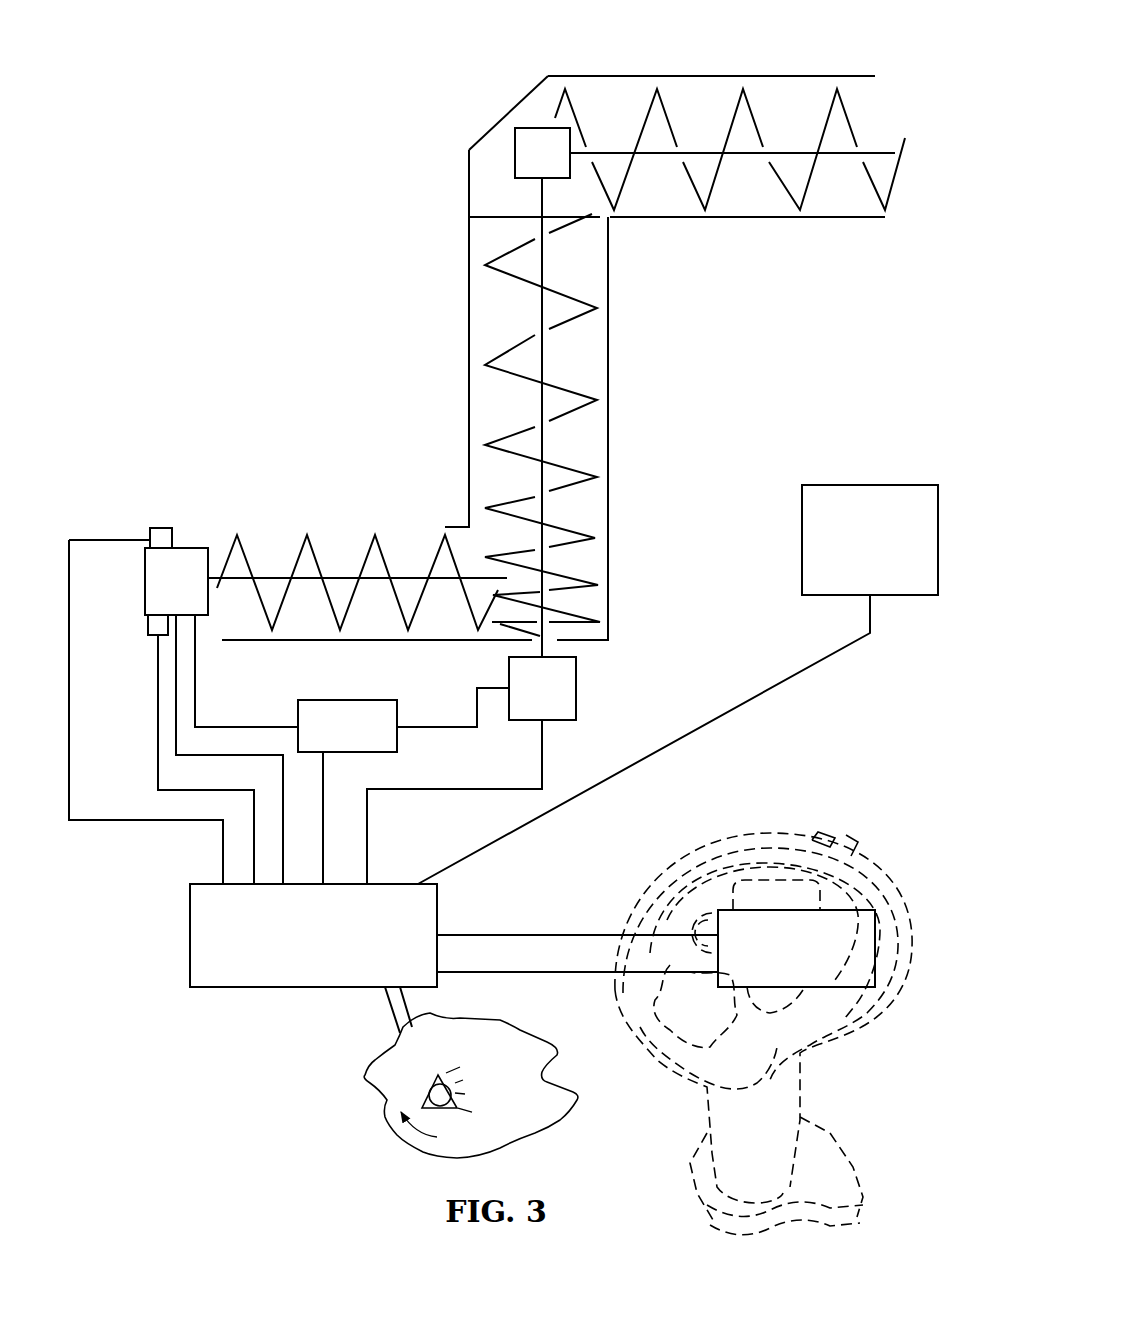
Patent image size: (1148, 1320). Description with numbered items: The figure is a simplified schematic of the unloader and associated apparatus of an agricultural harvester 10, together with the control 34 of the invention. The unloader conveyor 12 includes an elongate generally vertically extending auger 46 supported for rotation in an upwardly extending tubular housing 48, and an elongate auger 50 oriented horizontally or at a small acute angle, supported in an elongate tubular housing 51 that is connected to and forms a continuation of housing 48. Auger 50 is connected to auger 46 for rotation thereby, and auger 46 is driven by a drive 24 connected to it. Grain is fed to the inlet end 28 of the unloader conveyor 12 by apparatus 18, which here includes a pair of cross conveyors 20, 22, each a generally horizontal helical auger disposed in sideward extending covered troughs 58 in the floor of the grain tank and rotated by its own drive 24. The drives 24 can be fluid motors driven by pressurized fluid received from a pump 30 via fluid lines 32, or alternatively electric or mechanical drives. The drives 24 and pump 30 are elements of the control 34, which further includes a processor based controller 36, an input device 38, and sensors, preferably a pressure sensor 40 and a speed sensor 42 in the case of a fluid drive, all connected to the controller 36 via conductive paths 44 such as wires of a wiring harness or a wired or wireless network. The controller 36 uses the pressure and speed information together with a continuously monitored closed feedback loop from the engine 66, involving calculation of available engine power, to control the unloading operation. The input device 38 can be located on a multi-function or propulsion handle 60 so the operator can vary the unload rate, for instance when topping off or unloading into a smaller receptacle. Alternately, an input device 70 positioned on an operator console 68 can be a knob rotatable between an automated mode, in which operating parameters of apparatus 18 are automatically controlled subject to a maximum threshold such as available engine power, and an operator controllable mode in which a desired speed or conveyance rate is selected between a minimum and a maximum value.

The agricultural harvester 10 is at (248, 240).
The unloader conveyor 12 is at (659, 68).
The apparatus 18 is at (302, 443).
The cross conveyor 20 is at (441, 527).
The cross conveyor 22 is at (441, 527).
The drive 24 is at (160, 599).
The inlet end 28 is at (609, 494).
The pump 30 is at (397, 743).
The fluid lines 32 is at (228, 723).
The control 34 is at (243, 1012).
The processor based controller 36 is at (295, 952).
The input device 38 is at (778, 963).
The pressure sensor 40 is at (158, 527).
The speed sensor 42 is at (149, 636).
The conductive paths 44 is at (493, 840).
The auger 46 is at (580, 388).
The tubular housing 48 is at (609, 441).
The auger 50 is at (758, 118).
The tubular housing 51 is at (735, 218).
The covered troughs 58 is at (412, 642).
The propulsion handle 60 is at (773, 834).
The engine 66 is at (853, 558).
The operator console 68 is at (540, 1128).
The input device 70 is at (395, 1107).